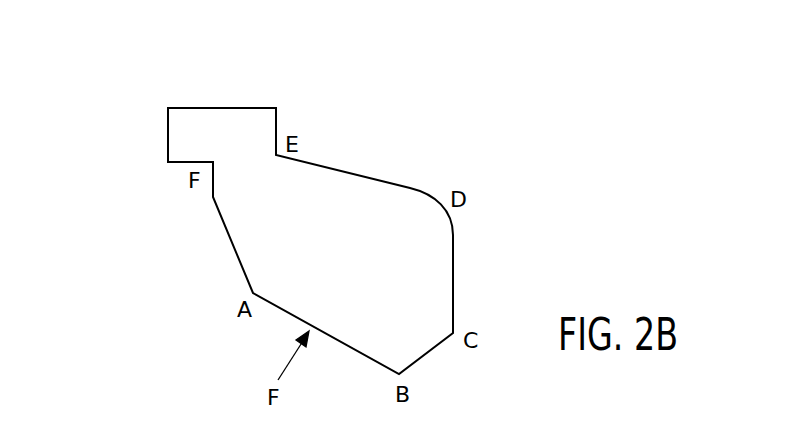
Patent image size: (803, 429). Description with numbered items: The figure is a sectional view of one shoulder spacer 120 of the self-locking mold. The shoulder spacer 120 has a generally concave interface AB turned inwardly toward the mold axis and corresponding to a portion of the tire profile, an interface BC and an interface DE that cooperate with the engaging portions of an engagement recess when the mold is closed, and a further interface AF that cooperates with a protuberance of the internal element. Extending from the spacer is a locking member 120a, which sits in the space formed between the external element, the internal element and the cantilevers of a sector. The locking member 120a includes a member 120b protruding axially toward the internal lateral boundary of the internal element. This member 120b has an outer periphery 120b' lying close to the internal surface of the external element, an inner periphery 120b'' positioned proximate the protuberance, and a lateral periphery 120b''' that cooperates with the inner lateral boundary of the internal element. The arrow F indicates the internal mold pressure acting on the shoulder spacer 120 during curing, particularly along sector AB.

The shoulder spacer 120 is at (412, 130).
The locking member 120a is at (217, 135).
The member 120b is at (189, 102).
The outer periphery 120b' is at (222, 61).
The inner periphery 120b'' is at (174, 207).
The lateral periphery 120b''' is at (107, 135).